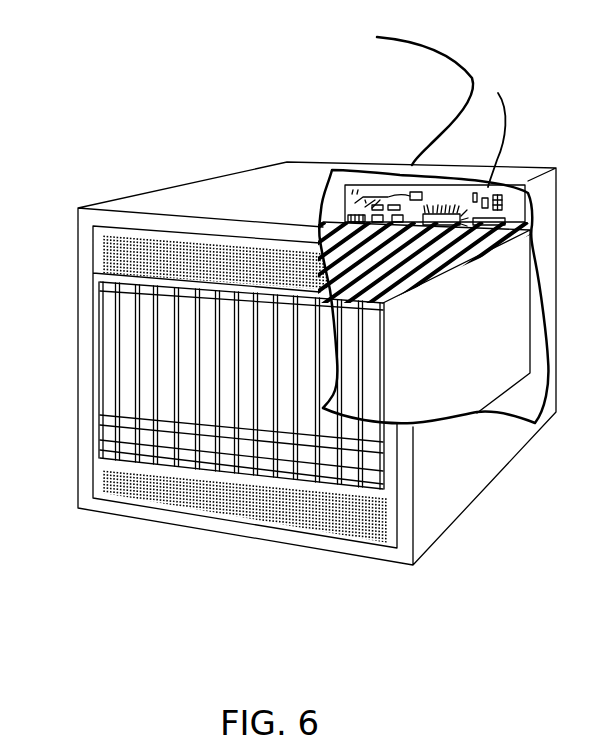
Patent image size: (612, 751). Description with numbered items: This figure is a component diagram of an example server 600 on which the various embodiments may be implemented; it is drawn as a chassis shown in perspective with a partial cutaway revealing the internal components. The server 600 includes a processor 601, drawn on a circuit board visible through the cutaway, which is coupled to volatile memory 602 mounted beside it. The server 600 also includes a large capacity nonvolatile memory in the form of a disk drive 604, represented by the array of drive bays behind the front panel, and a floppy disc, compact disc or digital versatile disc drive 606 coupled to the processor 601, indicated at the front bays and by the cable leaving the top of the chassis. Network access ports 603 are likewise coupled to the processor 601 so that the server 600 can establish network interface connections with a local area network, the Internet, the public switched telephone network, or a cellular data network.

The server 600 is at (223, 177).
The processor 601 is at (447, 217).
The volatile memory 602 is at (510, 220).
The network access ports 603 is at (350, 220).
The disk drive 604 is at (147, 334).
The digital versatile disc (DVD) drive 606 is at (470, 82).